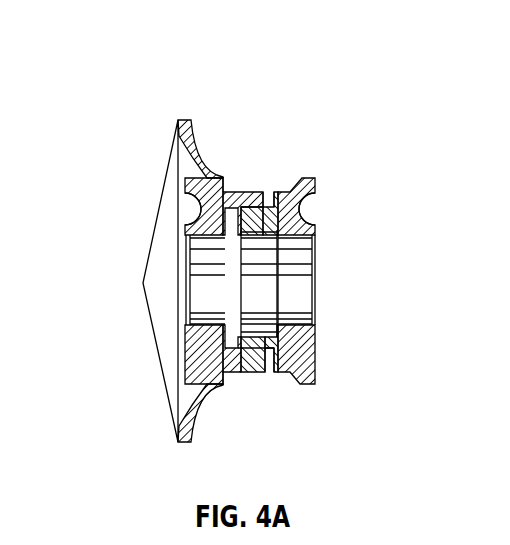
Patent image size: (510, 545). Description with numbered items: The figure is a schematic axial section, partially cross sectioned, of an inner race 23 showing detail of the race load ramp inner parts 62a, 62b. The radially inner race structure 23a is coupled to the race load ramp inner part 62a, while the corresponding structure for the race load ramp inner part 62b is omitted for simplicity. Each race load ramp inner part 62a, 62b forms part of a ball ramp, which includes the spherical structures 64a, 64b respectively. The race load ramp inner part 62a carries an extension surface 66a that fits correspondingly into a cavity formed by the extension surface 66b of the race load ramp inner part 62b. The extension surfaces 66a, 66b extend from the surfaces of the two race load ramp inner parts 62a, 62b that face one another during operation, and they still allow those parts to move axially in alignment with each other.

The inner race 23 is at (219, 280).
The radially inner race structure 23a is at (178, 129).
The race load ramp inner part 62a is at (166, 273).
The race load ramp inner part 62b is at (332, 272).
The spherical structure 64a is at (190, 210).
The spherical structure 64b is at (307, 210).
The extension surface 66a is at (234, 197).
The extension surface 66b is at (268, 210).